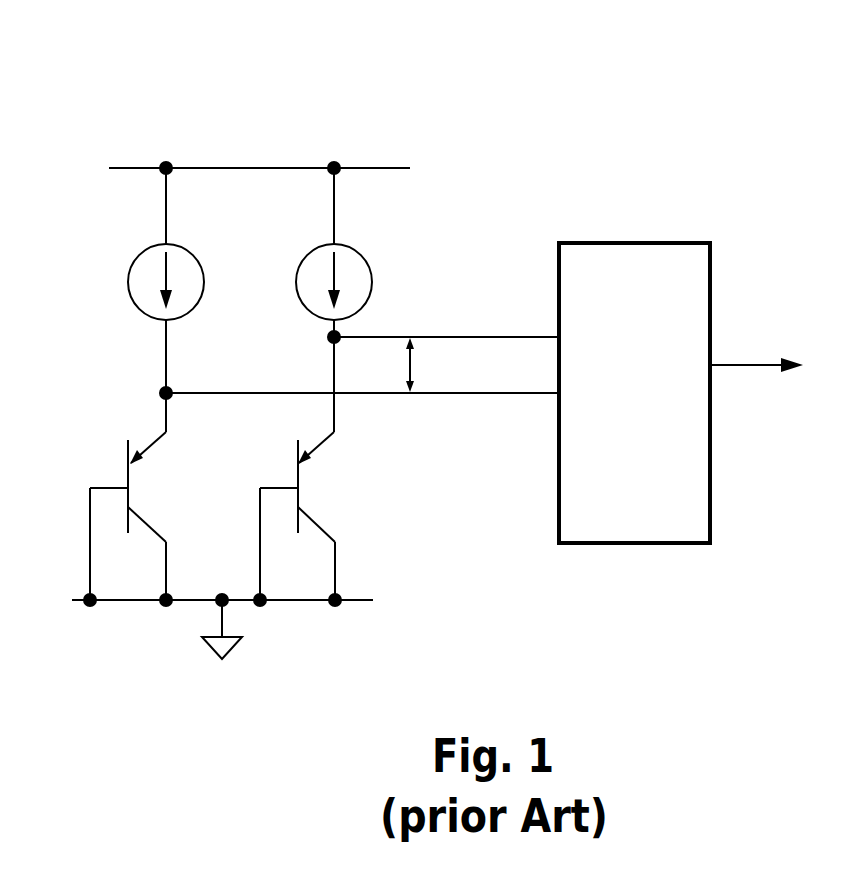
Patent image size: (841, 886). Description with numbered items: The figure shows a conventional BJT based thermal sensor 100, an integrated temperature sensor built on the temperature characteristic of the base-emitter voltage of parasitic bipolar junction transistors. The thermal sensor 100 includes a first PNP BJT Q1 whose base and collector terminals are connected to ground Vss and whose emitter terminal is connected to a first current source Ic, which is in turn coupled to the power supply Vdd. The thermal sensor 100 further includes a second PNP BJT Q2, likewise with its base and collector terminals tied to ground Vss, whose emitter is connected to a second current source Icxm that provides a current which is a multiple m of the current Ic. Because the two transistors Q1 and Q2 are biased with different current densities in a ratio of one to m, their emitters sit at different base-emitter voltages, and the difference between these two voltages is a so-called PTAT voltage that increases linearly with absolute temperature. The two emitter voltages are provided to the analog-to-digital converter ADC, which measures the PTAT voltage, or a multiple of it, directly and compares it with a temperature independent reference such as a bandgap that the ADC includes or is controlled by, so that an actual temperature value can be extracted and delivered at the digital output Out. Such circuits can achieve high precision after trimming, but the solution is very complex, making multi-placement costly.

The thermal sensor 100 is at (455, 50).
The first PNP BJT Q1 is at (134, 496).
The second PNP BJT Q2 is at (304, 468).
The first current source Ic is at (179, 280).
The second current source Icxm is at (373, 252).
The analog-to-digital converter ADC is at (634, 393).
The power supply Vdd is at (259, 155).
The ground Vss is at (222, 630).
The digital output Out is at (756, 356).